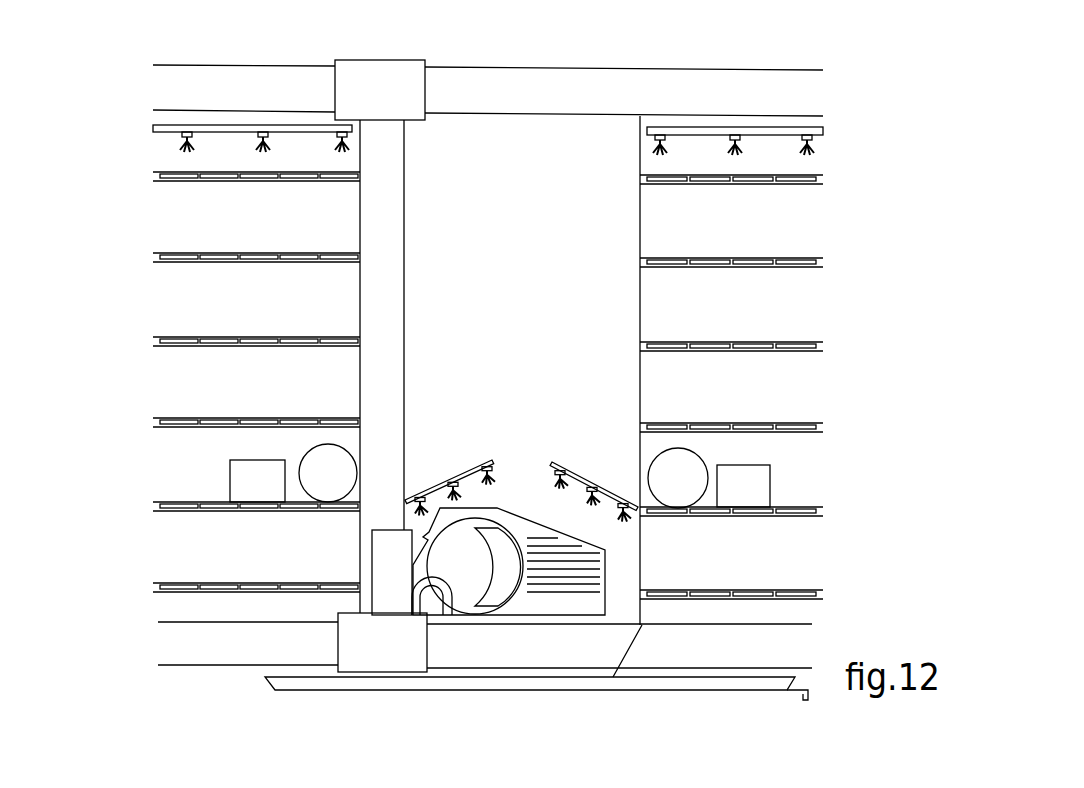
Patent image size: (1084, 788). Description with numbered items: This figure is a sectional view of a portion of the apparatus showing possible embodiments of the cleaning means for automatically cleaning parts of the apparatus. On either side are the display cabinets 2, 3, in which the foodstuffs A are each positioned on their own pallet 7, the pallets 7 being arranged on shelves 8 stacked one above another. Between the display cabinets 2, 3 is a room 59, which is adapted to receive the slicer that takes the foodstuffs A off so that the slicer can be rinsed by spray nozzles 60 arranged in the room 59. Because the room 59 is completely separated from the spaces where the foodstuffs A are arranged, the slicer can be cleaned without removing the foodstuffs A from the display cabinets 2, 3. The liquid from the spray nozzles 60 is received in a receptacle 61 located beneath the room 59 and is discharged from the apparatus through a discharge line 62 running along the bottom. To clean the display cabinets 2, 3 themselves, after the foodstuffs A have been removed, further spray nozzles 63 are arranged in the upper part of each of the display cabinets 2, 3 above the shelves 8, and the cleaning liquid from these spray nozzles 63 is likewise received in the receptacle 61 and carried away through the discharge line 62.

The display cabinet 2 is at (225, 212).
The display cabinet 3 is at (767, 319).
The pallet 7 is at (795, 268).
The shelf 8 is at (790, 185).
The spray nozzles 63 is at (342, 132).
The spray nozzles 60 is at (489, 467).
The room 59 is at (518, 462).
The receptacle 61 is at (523, 655).
The discharge line 62 is at (697, 683).
The foodstuffs A is at (760, 482).